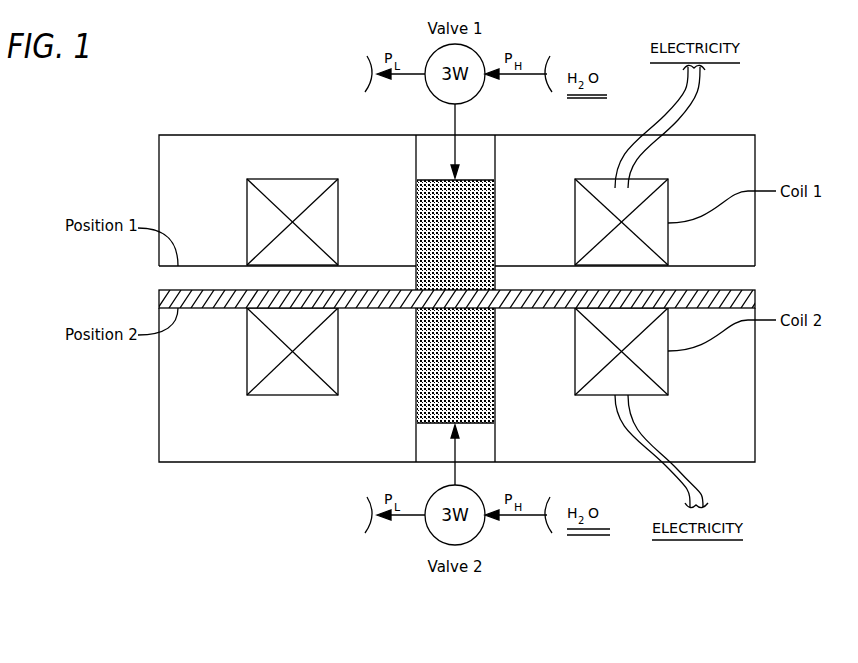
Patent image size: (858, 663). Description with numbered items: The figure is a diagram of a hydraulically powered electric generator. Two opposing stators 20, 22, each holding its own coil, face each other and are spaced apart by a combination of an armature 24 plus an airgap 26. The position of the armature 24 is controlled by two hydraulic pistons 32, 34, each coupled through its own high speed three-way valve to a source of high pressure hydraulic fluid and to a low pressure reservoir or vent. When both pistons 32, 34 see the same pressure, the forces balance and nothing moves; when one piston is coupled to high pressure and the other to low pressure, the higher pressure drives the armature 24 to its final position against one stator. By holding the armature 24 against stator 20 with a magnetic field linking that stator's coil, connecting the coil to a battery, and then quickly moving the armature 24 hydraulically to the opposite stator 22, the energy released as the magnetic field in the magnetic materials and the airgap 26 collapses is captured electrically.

The stator 20 is at (207, 147).
The stator 22 is at (205, 452).
The armature 24 is at (757, 299).
The airgap 26 is at (165, 279).
The hydraulic piston 32 is at (433, 180).
The hydraulic piston 34 is at (432, 423).